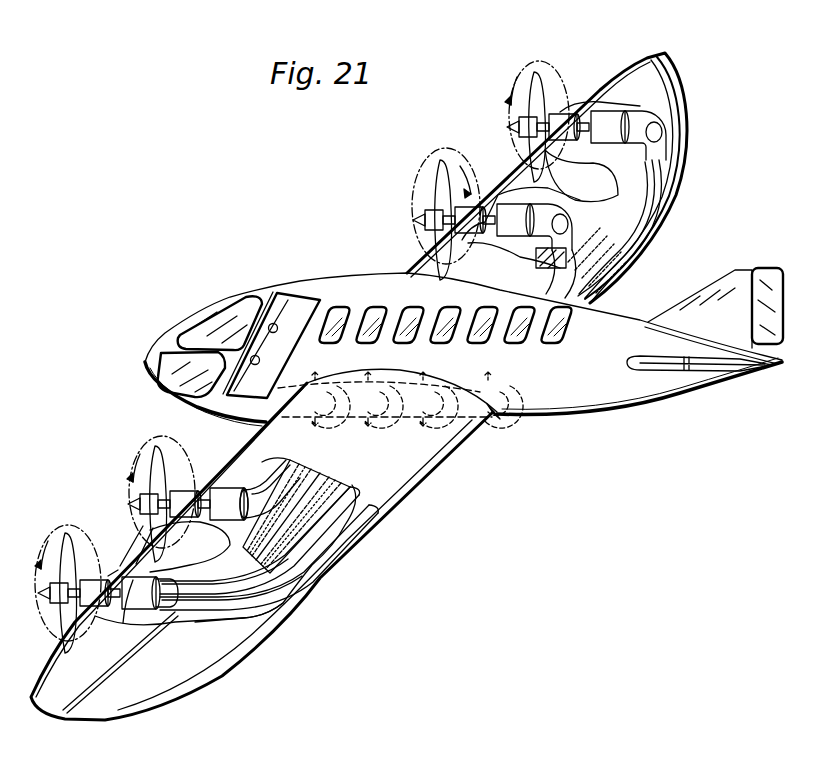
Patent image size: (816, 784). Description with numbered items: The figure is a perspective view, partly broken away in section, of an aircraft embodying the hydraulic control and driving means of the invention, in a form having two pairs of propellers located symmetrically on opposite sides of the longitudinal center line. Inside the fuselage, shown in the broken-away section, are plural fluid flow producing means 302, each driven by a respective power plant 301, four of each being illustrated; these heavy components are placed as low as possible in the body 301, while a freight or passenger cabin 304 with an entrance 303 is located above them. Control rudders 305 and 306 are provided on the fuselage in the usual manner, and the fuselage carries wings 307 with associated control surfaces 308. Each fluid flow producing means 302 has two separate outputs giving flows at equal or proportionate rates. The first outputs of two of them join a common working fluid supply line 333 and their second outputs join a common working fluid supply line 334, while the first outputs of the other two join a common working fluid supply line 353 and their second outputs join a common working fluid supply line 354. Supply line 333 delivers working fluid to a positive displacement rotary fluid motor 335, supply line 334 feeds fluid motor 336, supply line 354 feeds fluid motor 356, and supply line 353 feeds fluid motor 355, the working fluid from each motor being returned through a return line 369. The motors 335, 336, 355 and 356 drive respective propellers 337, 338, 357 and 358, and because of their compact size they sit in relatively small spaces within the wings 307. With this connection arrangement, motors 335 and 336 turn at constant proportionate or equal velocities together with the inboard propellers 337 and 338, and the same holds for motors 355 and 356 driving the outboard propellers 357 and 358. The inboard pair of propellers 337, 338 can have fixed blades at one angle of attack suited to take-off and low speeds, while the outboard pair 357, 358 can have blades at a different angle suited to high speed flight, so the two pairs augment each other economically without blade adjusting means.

The power plant 301 is at (203, 402).
The fluid flow producing means 302 is at (197, 332).
The entrance 303 is at (292, 310).
The freight or passenger cabin 304 is at (345, 308).
The control rudder 305 is at (762, 292).
The control rudder 306 is at (712, 366).
The wing 307 is at (650, 72).
The control surface 308 is at (684, 166).
The common working fluid supply line 333 is at (266, 490).
The common working fluid supply line 334 is at (557, 212).
The positive displacement rotary fluid motor 335 is at (230, 490).
The positive displacement rotary fluid motor 336 is at (498, 232).
The inboard propeller 337 is at (160, 452).
The inboard propeller 338 is at (450, 172).
The common working fluid supply line 353 is at (380, 445).
The common working fluid supply line 354 is at (662, 126).
The positive displacement rotary fluid motor 355 is at (125, 608).
The positive displacement rotary fluid motor 356 is at (603, 122).
The outboard propeller 357 is at (76, 556).
The outboard propeller 358 is at (535, 72).
The return line 369 is at (655, 147).